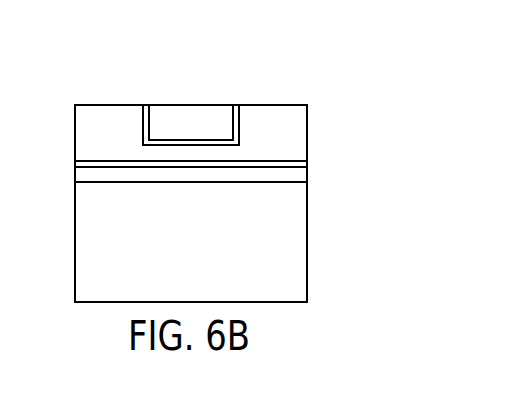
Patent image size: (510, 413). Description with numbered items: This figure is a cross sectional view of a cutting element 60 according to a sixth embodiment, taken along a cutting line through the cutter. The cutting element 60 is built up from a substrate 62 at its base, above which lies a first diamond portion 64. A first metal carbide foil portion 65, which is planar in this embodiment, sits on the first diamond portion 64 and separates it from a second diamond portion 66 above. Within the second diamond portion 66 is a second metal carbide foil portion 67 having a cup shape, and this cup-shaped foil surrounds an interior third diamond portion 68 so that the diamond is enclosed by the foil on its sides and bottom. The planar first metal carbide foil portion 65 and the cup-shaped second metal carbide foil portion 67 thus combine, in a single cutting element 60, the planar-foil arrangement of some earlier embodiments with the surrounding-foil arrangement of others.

The cutting element 60 is at (335, 82).
The substrate 62 is at (285, 240).
The first diamond portion 64 is at (290, 173).
The first metal carbide foil portion 65 is at (290, 164).
The second diamond portion 66 is at (290, 133).
The second metal carbide foil portion 67 is at (234, 120).
The third diamond portion 68 is at (190, 120).